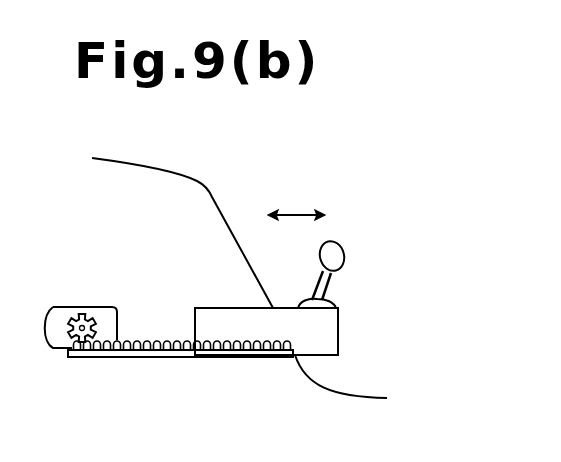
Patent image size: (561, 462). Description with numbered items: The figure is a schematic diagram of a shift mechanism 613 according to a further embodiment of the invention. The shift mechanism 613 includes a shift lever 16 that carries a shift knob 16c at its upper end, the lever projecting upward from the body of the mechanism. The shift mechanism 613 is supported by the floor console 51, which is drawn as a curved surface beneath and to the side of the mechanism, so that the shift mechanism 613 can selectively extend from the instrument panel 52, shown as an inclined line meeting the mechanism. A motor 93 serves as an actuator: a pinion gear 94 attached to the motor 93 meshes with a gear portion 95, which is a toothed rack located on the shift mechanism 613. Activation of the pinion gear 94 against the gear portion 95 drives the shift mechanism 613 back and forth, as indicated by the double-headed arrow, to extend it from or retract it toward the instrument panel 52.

The shift lever 16 is at (357, 265).
The shift knob 16c is at (338, 248).
The floor console 51 is at (358, 393).
The instrument panel 52 is at (263, 288).
The motor 93 is at (117, 322).
The pinion gear 94 is at (84, 313).
The gear portion 95 is at (167, 353).
The shift mechanism 613 is at (428, 348).